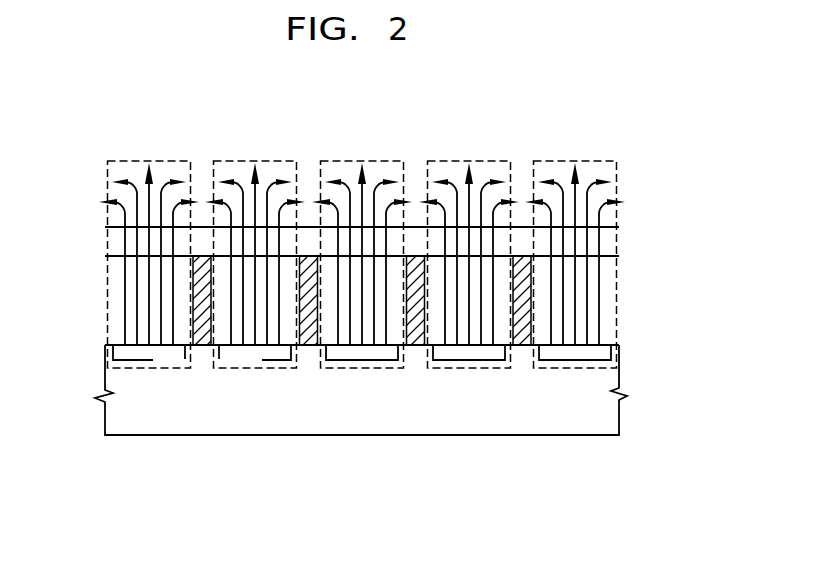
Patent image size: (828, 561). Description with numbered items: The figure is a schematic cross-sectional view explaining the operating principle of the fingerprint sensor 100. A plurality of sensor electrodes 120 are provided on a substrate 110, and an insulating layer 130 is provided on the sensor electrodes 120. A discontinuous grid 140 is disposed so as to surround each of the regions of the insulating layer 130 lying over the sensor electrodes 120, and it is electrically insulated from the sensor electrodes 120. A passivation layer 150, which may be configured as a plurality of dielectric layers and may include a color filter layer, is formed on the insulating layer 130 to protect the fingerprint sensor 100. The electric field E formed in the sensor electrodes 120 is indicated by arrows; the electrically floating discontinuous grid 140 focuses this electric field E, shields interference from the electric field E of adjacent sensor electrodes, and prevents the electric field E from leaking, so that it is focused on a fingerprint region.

The fingerprint sensor 100 is at (136, 126).
The substrate 110 is at (620, 412).
The sensor electrodes 120 is at (243, 355).
The insulating layer 130 is at (435, 273).
The discontinuous grid 140 is at (414, 275).
The passivation layer 150 is at (619, 245).
The electric field E is at (232, 161).